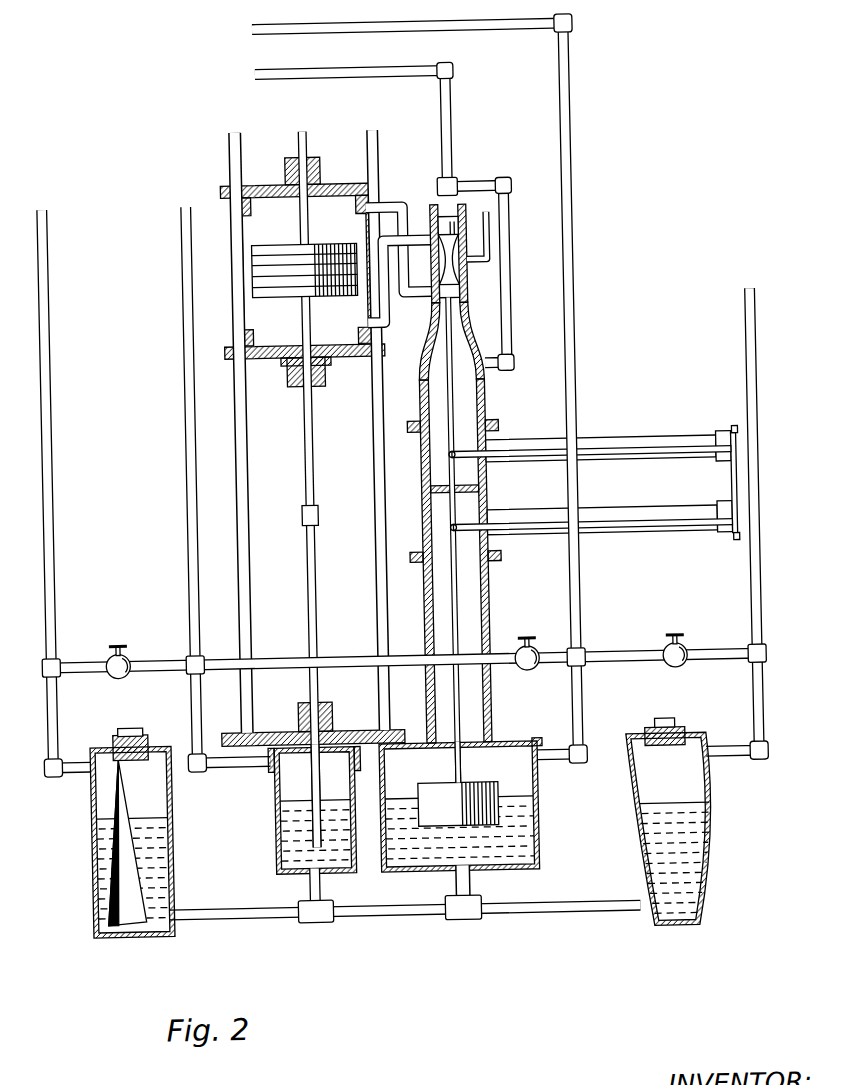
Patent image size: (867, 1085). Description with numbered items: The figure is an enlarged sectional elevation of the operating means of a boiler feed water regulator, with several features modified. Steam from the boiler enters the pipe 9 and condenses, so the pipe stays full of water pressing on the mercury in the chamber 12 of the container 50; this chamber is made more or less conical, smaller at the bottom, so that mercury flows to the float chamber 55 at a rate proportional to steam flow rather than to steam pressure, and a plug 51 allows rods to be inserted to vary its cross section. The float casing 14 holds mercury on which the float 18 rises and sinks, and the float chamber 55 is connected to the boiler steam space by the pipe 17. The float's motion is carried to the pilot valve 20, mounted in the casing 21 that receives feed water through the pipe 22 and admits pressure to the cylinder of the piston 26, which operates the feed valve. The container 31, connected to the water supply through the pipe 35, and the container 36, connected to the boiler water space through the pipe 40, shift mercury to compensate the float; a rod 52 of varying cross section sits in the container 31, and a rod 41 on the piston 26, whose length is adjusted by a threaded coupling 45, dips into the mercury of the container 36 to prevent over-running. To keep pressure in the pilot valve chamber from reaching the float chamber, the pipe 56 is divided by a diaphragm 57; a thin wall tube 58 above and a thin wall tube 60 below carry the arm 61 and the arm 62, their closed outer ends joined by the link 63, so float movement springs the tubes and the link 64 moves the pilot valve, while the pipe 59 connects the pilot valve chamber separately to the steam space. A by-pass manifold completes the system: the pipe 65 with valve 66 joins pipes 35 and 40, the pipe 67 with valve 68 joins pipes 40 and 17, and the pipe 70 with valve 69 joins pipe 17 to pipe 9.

The pipe 9 is at (762, 605).
The chamber 12 is at (690, 790).
The float casing 14 is at (536, 852).
The pipe 17 is at (583, 610).
The float 18 is at (480, 785).
The pilot valve 20 is at (450, 212).
The casing 21 is at (474, 286).
The pipe 22 is at (497, 232).
The piston 26 is at (262, 281).
The container 31 is at (168, 860).
The pipe 35 is at (57, 502).
The container 36 is at (270, 815).
The pipe 40 is at (186, 508).
The rod 41 is at (318, 440).
The coupling 45 is at (322, 513).
The container 50 is at (708, 842).
The plug 51 is at (683, 730).
The rod 52 is at (92, 870).
The float chamber 55 is at (516, 745).
The pipe 56 is at (490, 408).
The diaphragm 57 is at (478, 492).
The thin wall tube 58 is at (520, 450).
The pipe 59 is at (461, 133).
The thin wall tube 60 is at (527, 536).
The arm 61 is at (626, 441).
The arm 62 is at (648, 537).
The link 63 is at (734, 490).
The link 64 is at (440, 381).
The pipe 65 is at (135, 668).
The valve 66 is at (122, 648).
The pipe 67 is at (346, 660).
The valve 68 is at (528, 648).
The valve 69 is at (682, 650).
The pipe 70 is at (618, 667).